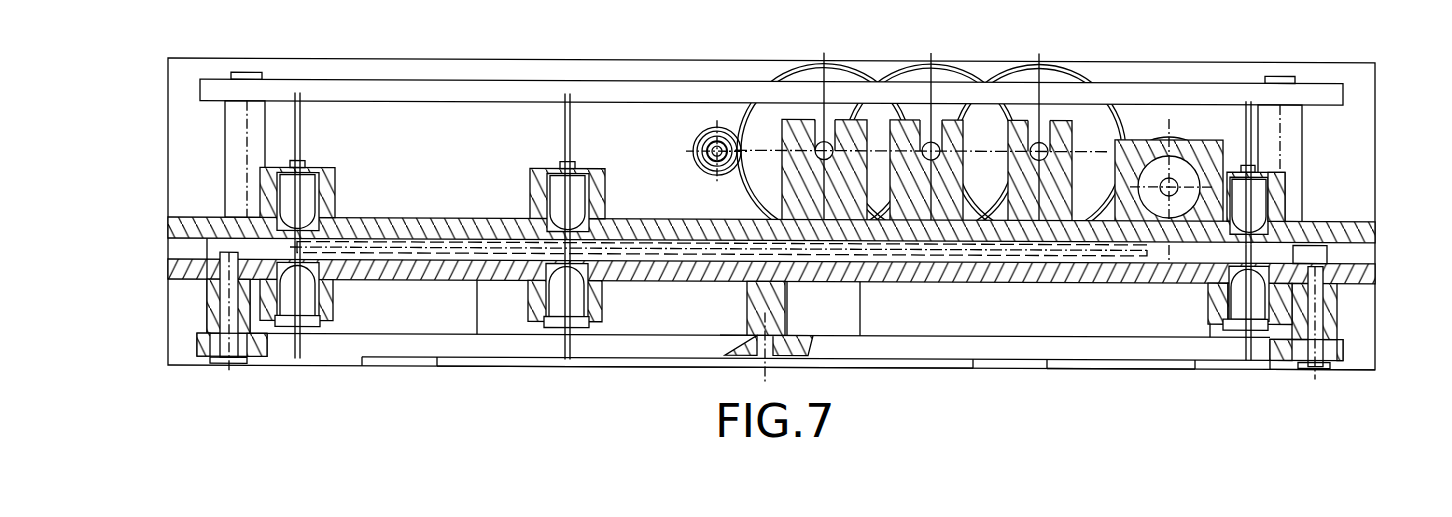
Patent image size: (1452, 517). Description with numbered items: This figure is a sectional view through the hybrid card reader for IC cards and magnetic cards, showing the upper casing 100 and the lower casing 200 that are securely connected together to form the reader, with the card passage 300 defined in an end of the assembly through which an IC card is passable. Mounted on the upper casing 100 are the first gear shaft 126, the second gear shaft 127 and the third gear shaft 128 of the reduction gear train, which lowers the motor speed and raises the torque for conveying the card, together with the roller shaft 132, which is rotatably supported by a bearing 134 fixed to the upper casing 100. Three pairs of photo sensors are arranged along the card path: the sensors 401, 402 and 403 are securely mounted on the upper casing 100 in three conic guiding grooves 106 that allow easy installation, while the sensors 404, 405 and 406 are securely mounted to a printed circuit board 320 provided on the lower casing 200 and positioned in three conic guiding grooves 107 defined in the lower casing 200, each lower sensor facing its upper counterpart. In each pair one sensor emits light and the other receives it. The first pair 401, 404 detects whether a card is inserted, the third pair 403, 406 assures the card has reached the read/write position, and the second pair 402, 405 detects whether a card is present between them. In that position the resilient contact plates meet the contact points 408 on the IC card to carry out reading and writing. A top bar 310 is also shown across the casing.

The upper casing 100 is at (175, 125).
The conic guiding grooves 106 is at (1283, 210).
The conic guiding grooves 107 is at (1208, 308).
The first gear shaft 126 is at (824, 140).
The second gear shaft 127 is at (931, 140).
The third gear shaft 128 is at (1039, 140).
The roller shaft 132 is at (1140, 175).
The bearing 134 is at (1180, 175).
The lower casing 200 is at (182, 360).
The card passage 300 is at (1365, 253).
The top bar 310 is at (1225, 90).
The printed circuit board 320 is at (400, 348).
The photo sensor 401 is at (1283, 183).
The photo sensor 402 is at (552, 190).
The photo sensor 403 is at (300, 185).
The photo sensor 404 is at (1240, 312).
The photo sensor 405 is at (556, 312).
The photo sensor 406 is at (300, 312).
The contact points 408 is at (496, 238).